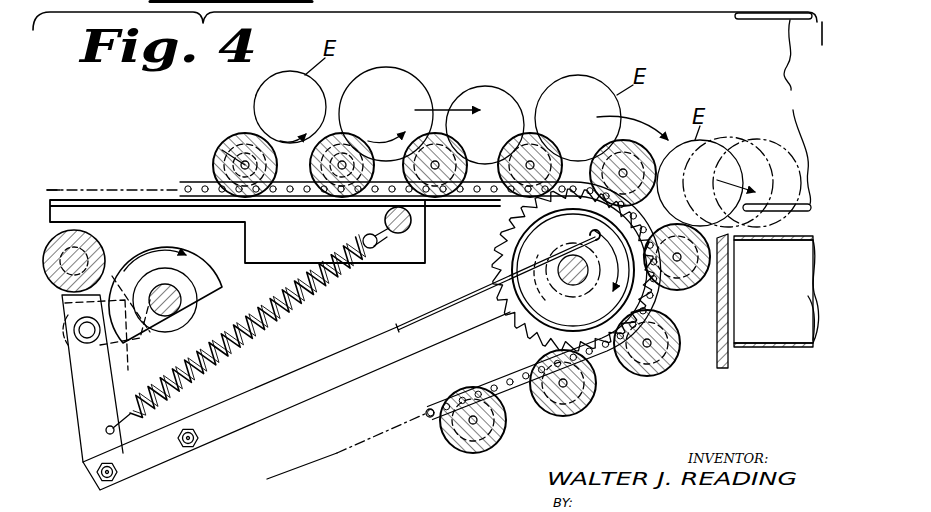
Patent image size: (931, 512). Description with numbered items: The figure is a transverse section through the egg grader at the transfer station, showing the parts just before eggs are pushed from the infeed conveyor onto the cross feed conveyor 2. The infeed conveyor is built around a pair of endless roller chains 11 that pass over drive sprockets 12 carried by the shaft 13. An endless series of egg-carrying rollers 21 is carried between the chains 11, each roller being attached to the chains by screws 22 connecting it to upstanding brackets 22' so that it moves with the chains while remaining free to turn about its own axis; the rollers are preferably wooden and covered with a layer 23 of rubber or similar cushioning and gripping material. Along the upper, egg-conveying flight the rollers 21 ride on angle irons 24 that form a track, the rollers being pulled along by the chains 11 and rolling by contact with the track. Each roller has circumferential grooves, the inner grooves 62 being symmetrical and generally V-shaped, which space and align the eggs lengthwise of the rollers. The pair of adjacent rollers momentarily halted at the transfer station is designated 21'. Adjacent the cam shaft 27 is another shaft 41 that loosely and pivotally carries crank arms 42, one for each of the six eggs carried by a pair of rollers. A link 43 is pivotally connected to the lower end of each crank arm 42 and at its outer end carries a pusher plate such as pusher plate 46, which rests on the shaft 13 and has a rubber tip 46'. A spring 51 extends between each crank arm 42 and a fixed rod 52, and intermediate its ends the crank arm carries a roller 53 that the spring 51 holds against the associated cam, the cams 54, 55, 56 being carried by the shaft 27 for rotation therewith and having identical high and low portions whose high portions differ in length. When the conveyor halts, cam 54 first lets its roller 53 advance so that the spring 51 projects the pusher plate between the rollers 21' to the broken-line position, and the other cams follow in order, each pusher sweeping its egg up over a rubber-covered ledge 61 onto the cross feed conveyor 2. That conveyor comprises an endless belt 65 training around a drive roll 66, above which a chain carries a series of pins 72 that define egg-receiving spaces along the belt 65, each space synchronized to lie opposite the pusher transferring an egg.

The cross feed conveyor 2 is at (764, 353).
The endless roller chains 11 is at (190, 187).
The drive sprockets 12 is at (494, 248).
The shaft 13 is at (574, 285).
The egg-carrying rollers 21 is at (377, 275).
The rollers at transfer station 21' is at (638, 217).
The screws 22 is at (211, 149).
The upstanding brackets 22' is at (585, 383).
The layer of cushioning and gripping material 23 is at (347, 134).
The angle irons 24 is at (95, 200).
The shaft 27 is at (176, 291).
The shaft 41 is at (85, 253).
The crank arms 42 is at (80, 396).
The link 43 is at (407, 352).
The pusher plate 46 is at (498, 272).
The tip 46' is at (561, 242).
The spring 51 is at (295, 322).
The fixed rod 52 is at (385, 219).
The roller 53 is at (72, 341).
The cam 54 is at (125, 350).
The cam 55 is at (143, 341).
The cam 56 is at (220, 286).
The ledge 61 is at (718, 290).
The inner grooves 62 is at (530, 130).
The endless belt 65 is at (792, 347).
The drive roll 66 is at (776, 291).
The pins 72 is at (790, 112).